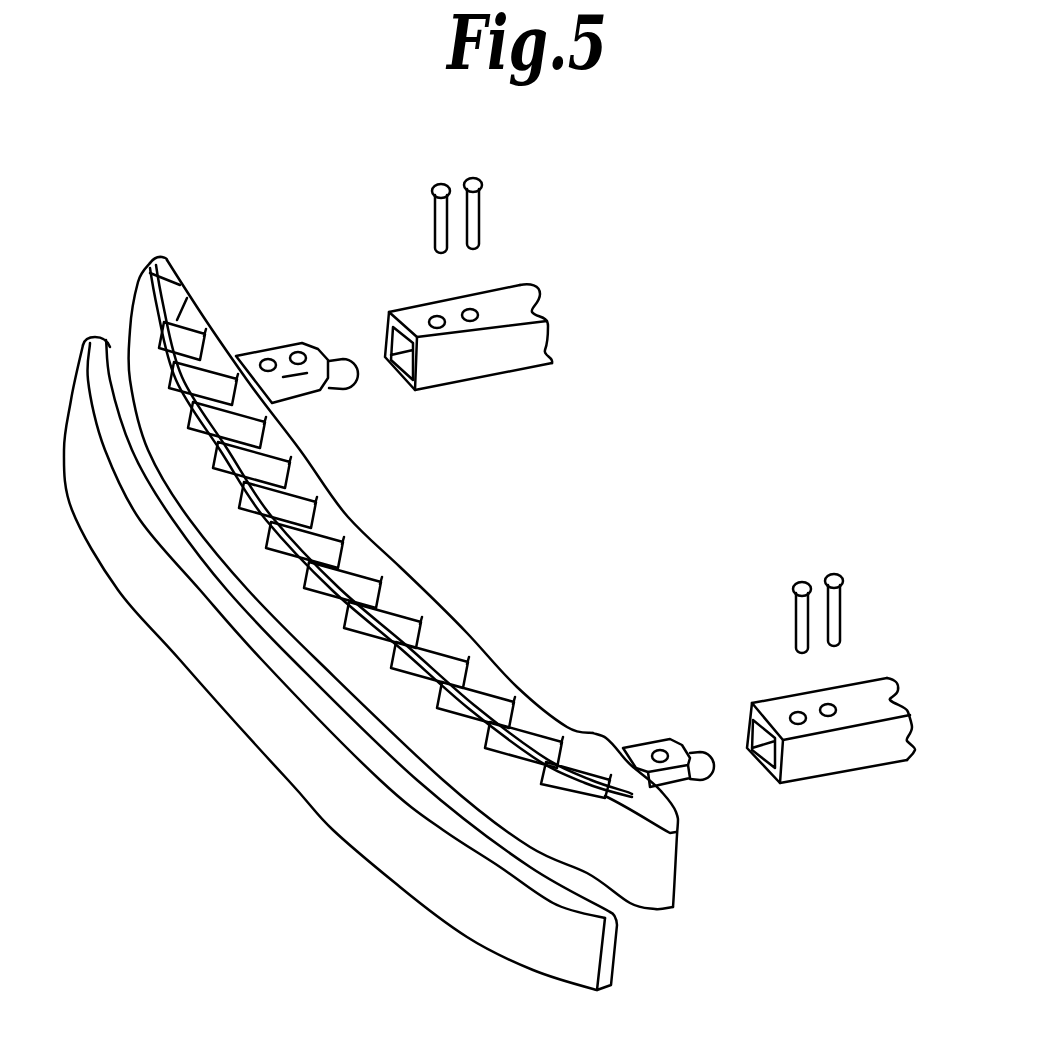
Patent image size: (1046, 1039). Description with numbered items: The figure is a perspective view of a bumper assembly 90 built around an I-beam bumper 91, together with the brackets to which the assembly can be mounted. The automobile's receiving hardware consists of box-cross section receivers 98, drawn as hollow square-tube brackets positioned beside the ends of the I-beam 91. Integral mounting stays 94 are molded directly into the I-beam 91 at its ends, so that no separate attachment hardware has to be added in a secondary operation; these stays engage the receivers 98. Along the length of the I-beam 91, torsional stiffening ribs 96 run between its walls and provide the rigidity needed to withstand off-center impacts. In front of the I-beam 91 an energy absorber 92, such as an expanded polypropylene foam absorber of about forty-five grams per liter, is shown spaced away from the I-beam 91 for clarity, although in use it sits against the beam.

The bumper assembly 90 is at (556, 514).
The I-beam bumper 91 is at (675, 887).
The energy absorber 92 is at (200, 655).
The integral mounting stays 94 is at (660, 740).
The torsional stiffening ribs 96 is at (368, 555).
The box-cross section receivers 98 is at (500, 352).